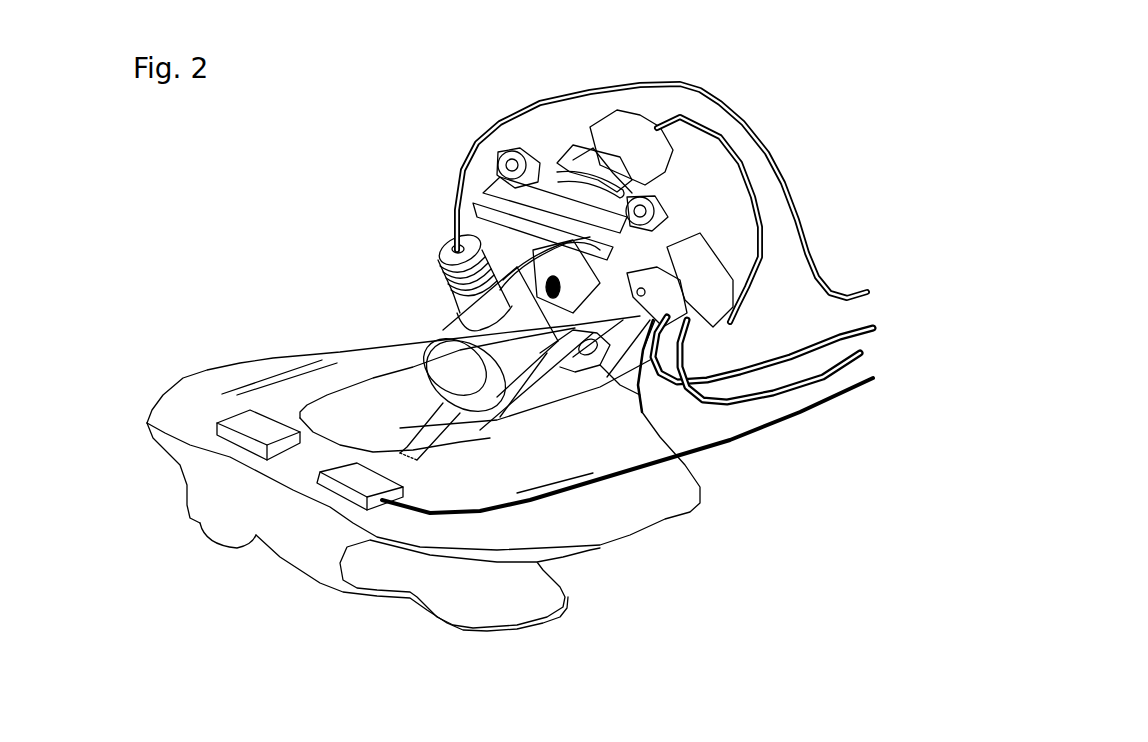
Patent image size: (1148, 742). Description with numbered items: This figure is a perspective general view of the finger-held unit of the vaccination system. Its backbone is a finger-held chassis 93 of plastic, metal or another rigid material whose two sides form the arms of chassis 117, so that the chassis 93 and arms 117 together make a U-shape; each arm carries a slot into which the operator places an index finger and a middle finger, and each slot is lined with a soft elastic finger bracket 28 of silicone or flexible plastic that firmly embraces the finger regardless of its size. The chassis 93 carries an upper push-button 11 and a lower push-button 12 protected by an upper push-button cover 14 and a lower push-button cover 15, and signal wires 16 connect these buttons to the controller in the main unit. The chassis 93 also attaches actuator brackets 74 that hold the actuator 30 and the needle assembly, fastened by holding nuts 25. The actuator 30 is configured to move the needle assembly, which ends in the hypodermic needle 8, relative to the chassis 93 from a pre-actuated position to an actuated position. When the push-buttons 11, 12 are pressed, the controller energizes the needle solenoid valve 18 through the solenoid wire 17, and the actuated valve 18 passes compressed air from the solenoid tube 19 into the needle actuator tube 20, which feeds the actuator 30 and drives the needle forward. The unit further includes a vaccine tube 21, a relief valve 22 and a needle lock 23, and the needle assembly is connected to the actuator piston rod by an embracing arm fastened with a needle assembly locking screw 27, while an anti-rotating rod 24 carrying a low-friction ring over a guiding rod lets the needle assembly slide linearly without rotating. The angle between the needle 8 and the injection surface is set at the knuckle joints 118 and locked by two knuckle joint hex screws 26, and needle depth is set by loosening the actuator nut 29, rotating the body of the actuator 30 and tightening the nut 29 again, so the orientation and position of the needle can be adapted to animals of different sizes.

The hypodermic needle 8 is at (330, 393).
The upper push-button 11 is at (307, 587).
The lower push-button 12 is at (220, 543).
The upper push-button cover 14 is at (337, 497).
The lower push-button cover 15 is at (233, 450).
The signal wires 16 is at (793, 420).
The solenoid wire 17 is at (717, 383).
The needle solenoid valve 18 is at (745, 347).
The solenoid tube 19 is at (760, 400).
The needle actuator tube 20 is at (750, 178).
The vaccine tube 21 is at (797, 200).
The relief valve 22 is at (443, 290).
The needle lock 23 is at (423, 378).
The anti-rotating rod 24 is at (580, 357).
The holding nuts 25 is at (607, 378).
The knuckle joint hex screw 26 is at (626, 208).
The needle assembly locking screw 27 is at (562, 287).
The finger bracket 28 is at (578, 610).
The actuator nut 29 is at (623, 180).
The actuator 30 is at (630, 123).
The actuator brackets 74 is at (622, 245).
The finger-held chassis 93 is at (190, 407).
The arms of chassis 117 is at (143, 270).
The knuckle joint 118 is at (645, 260).